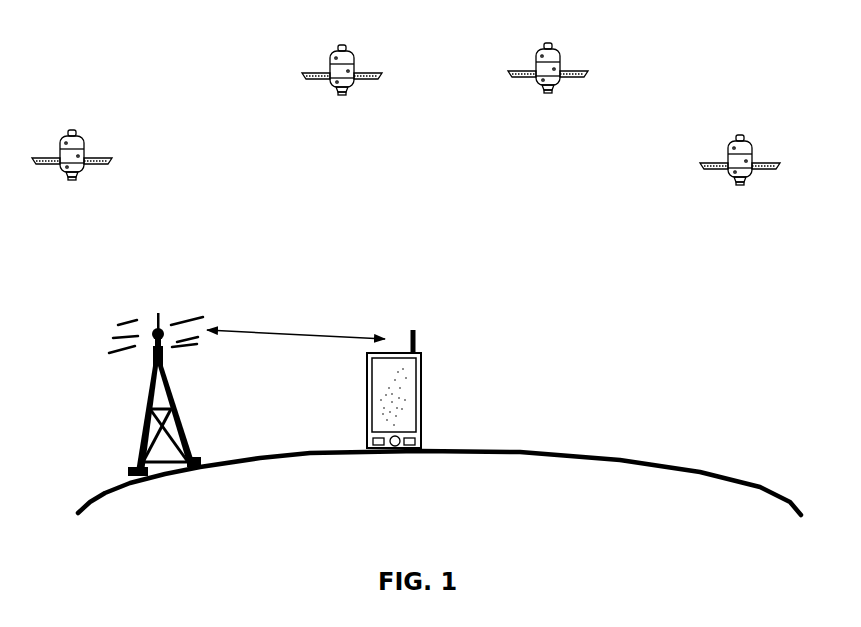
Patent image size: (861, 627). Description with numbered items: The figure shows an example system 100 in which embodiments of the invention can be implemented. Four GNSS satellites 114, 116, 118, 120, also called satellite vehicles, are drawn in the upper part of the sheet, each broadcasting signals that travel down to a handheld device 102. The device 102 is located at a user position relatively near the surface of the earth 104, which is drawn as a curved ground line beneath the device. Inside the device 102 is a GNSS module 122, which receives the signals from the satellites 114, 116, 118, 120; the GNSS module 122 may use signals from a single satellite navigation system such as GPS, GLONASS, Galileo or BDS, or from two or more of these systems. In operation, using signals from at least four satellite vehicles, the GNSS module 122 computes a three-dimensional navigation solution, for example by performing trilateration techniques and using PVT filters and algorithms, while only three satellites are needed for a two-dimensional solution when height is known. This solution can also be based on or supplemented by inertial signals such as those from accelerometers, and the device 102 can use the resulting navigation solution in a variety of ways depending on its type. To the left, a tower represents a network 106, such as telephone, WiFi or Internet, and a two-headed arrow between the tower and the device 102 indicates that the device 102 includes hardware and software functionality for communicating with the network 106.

The system 100 is at (670, 96).
The device 102 is at (422, 413).
The earth 104 is at (318, 457).
The network 106 is at (140, 383).
The GNSS satellite 114 is at (396, 331).
The GNSS satellite 116 is at (406, 318).
The GNSS satellite 118 is at (418, 320).
The GNSS satellite 120 is at (426, 330).
The GNSS module 122 is at (393, 391).